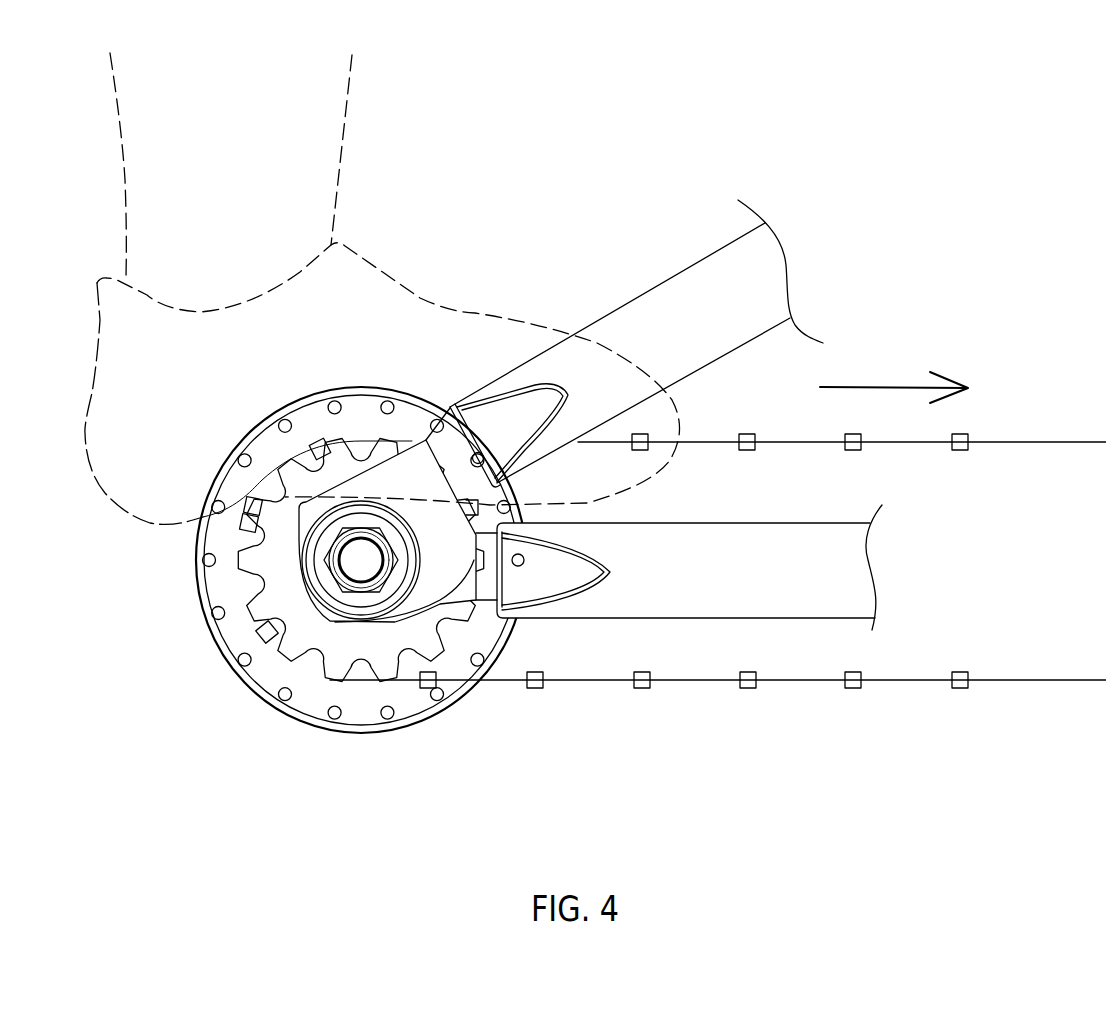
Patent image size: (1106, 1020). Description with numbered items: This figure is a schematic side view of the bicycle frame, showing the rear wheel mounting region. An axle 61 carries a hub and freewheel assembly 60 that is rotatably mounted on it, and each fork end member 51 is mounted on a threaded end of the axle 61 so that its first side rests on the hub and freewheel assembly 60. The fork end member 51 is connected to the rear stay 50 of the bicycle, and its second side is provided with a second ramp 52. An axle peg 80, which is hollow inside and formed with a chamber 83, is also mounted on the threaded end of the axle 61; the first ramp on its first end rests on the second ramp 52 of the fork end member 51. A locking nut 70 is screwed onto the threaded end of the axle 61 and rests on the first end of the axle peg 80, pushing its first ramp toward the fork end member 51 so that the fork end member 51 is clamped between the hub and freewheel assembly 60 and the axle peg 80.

The rear stay 50 is at (858, 573).
The fork end member 51 is at (375, 477).
The second ramp 52 is at (443, 582).
The hub and freewheel assembly 60 is at (466, 700).
The axle 61 is at (360, 563).
The locking nut 70 is at (320, 558).
The axle peg 80 is at (310, 598).
The chamber 83 is at (410, 553).